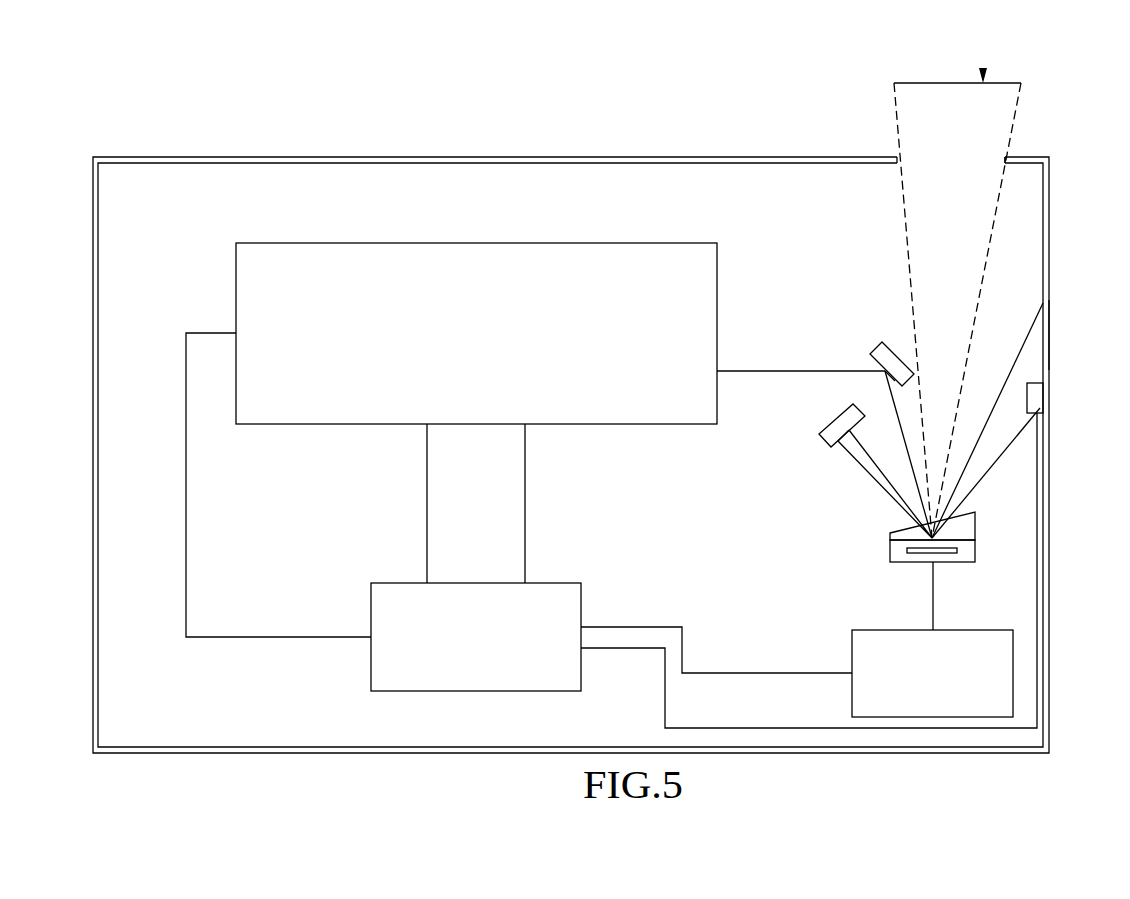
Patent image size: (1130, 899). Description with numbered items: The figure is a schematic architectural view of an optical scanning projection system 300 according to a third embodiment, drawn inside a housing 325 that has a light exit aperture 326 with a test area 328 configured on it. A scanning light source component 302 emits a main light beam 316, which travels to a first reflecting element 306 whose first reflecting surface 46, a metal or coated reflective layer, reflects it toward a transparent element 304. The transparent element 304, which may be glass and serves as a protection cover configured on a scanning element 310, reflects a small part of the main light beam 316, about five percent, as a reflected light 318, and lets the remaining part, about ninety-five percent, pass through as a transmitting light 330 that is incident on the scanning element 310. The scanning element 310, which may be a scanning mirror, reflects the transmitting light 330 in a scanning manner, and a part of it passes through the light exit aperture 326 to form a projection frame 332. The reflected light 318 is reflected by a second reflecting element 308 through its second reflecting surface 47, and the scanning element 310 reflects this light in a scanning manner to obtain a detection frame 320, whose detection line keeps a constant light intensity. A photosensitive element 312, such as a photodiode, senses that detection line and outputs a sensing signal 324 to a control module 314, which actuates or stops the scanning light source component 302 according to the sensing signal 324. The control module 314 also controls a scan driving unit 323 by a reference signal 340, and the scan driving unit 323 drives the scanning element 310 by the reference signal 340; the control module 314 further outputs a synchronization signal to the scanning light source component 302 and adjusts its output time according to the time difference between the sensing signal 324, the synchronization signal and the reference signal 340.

The optical scanning projection system 300 is at (89, 104).
The scanning light source component 302 is at (473, 240).
The transparent element 304 is at (968, 518).
The first reflecting element 306 is at (885, 352).
The second reflecting element 308 is at (834, 426).
The scanning element 310 is at (968, 550).
The photosensitive element 312 is at (1043, 383).
The control module 314 is at (583, 594).
The main light beam 316 is at (763, 368).
The reflected light 318 is at (984, 468).
The detection frame 320 is at (1047, 337).
The scan driving unit 323 is at (850, 686).
The sensing signal 324 is at (742, 725).
The housing 325 is at (1050, 206).
The light exit aperture 326 is at (997, 152).
The test area 328 is at (1006, 168).
The transmitting light 330 is at (905, 177).
The projection frame 332 is at (985, 66).
The reference signal 340 is at (768, 672).
The first reflecting surface 46 is at (871, 365).
The second reflecting surface 47 is at (838, 446).